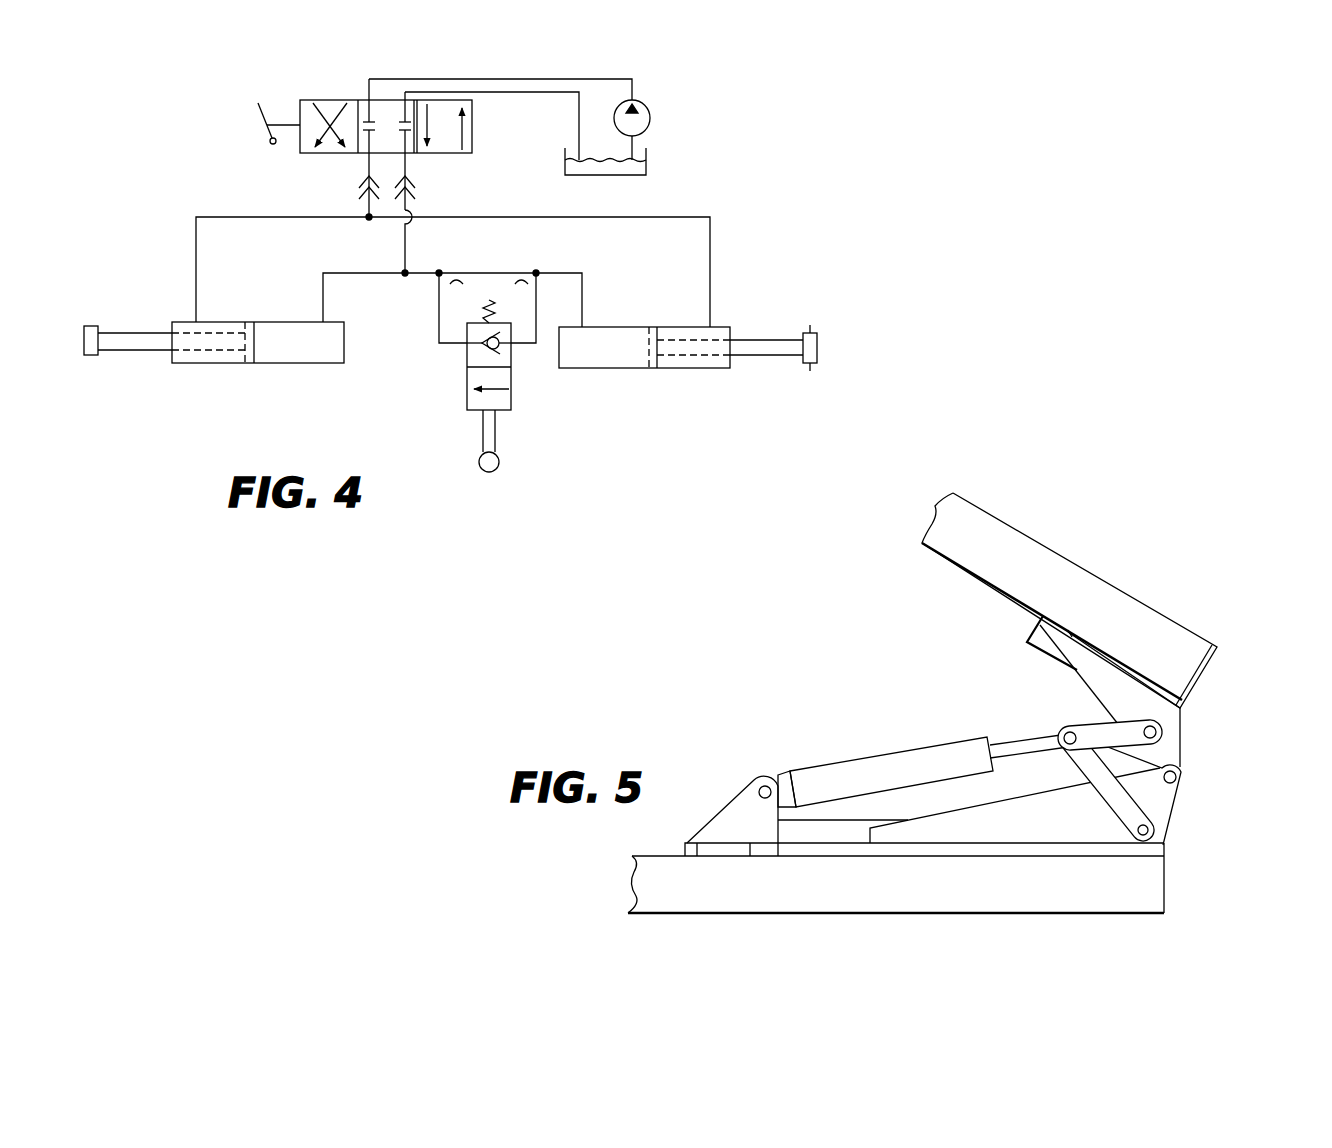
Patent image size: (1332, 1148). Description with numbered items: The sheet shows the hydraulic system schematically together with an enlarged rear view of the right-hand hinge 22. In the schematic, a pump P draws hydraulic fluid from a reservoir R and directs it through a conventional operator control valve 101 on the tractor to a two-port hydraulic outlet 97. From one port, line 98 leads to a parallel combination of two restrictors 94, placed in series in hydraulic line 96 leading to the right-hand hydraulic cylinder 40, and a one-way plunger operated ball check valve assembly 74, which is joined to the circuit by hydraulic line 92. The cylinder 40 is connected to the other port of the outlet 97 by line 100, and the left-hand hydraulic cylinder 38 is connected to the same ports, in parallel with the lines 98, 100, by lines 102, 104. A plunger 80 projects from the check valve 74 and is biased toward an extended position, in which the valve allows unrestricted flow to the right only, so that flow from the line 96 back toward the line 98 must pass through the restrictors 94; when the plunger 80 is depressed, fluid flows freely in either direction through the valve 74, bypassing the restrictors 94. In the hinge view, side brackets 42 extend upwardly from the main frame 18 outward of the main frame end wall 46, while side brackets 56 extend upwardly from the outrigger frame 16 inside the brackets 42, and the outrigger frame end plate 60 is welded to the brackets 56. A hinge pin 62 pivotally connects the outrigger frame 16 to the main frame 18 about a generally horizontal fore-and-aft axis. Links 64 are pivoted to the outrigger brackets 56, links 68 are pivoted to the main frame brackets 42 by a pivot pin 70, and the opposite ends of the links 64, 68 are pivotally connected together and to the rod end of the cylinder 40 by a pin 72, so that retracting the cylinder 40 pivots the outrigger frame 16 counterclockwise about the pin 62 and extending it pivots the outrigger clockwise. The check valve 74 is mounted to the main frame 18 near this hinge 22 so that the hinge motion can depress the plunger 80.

In FIG. 5, the outrigger frame 16 is at (1113, 585).
In FIG. 5, the main frame 18 is at (668, 855).
In FIG. 5, the right-hand hinge 22 is at (1249, 654).
In FIG. 4, the hydraulic cylinder 38 is at (264, 322).
In FIG. 4, the hydraulic cylinder 40 is at (686, 327).
In FIG. 5, the hydraulic cylinder 40 is at (938, 746).
In FIG. 5, the side brackets 42 is at (1009, 832).
In FIG. 5, the main frame end wall 46 is at (1166, 886).
In FIG. 5, the side brackets 56 is at (1181, 724).
In FIG. 5, the outrigger frame end plate 60 is at (1196, 680).
In FIG. 5, the hinge pin 62 is at (1177, 775).
In FIG. 5, the links 64 is at (1114, 723).
In FIG. 5, the links 68 is at (1103, 802).
In FIG. 5, the pivot pin 70 is at (1150, 829).
In FIG. 4, the pin 72 is at (812, 333).
In FIG. 5, the pin 72 is at (1064, 732).
In FIG. 4, the one-way plunger operated ball check valve assembly 74 is at (453, 386).
In FIG. 4, the plunger 80 is at (484, 437).
In FIG. 4, the hydraulic line 92 is at (439, 318).
In FIG. 4, the restrictors 94 is at (519, 265).
In FIG. 4, the hydraulic line 96 is at (584, 272).
In FIG. 4, the hydraulic outlet 97 is at (318, 176).
In FIG. 4, the line 98 is at (421, 250).
In FIG. 4, the line 100 is at (695, 218).
In FIG. 4, the operator control valve 101 is at (473, 130).
In FIG. 4, the line 102 is at (388, 272).
In FIG. 4, the line 104 is at (290, 217).
In FIG. 4, the pump P is at (650, 110).
In FIG. 4, the reservoir R is at (646, 163).